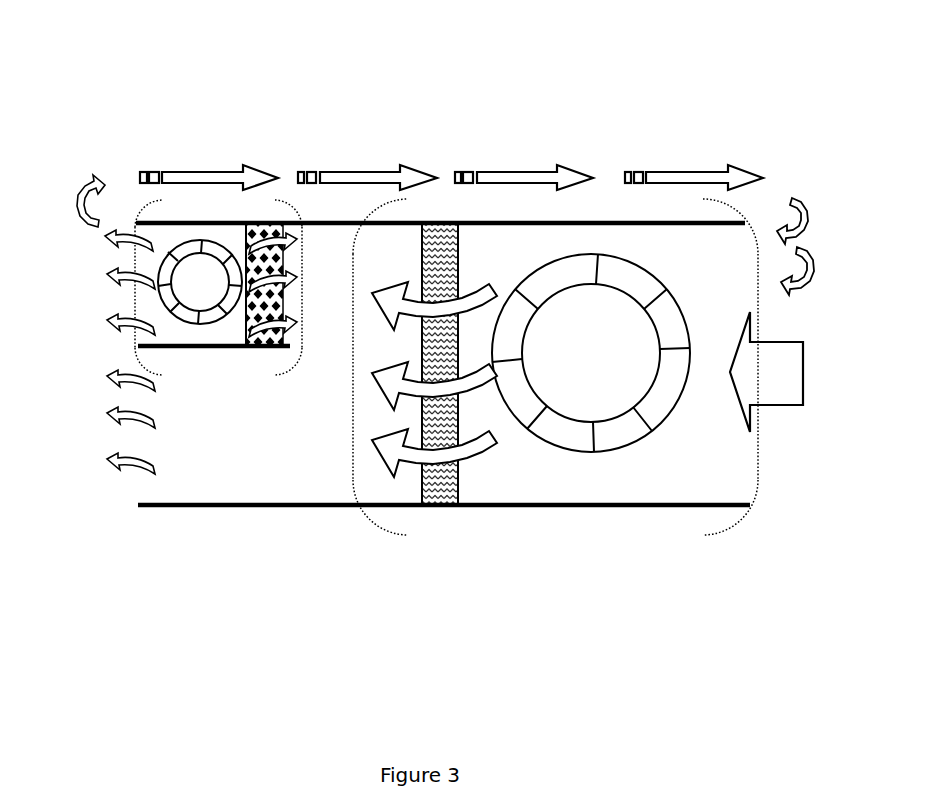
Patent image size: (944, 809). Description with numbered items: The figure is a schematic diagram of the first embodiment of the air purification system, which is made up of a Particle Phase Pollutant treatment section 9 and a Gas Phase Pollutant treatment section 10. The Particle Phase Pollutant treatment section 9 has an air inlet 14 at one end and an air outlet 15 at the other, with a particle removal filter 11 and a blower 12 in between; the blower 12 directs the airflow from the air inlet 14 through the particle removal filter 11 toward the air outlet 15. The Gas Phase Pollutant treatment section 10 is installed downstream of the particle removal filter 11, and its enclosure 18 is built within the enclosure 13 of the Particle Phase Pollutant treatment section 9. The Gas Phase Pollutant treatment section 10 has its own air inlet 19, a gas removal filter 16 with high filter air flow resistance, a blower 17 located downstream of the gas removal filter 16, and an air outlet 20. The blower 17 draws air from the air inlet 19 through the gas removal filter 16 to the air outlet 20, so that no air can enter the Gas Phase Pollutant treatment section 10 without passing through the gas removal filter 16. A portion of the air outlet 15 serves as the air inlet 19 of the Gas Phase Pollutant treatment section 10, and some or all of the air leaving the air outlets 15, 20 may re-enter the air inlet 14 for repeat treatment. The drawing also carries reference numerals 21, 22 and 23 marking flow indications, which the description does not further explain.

The Particle Phase Pollutant (PPP) treatment section 9 is at (358, 505).
The Gas Phase Pollutant (GPP) treatment section 10 is at (150, 245).
The particle removal filter 11 is at (452, 470).
The blower 12 is at (583, 442).
The enclosure 13 is at (642, 505).
The air inlet 14 is at (775, 428).
The air outlet 15 is at (330, 408).
The gas removal filter 16 is at (248, 230).
The blower 17 is at (205, 265).
The enclosure 18 is at (145, 267).
The air inlet 19 is at (290, 270).
The air outlet 20 is at (130, 297).
The filter air flow 21 is at (450, 307).
The exhaust air flow 22 is at (118, 305).
The air flow direction 23 is at (667, 178).